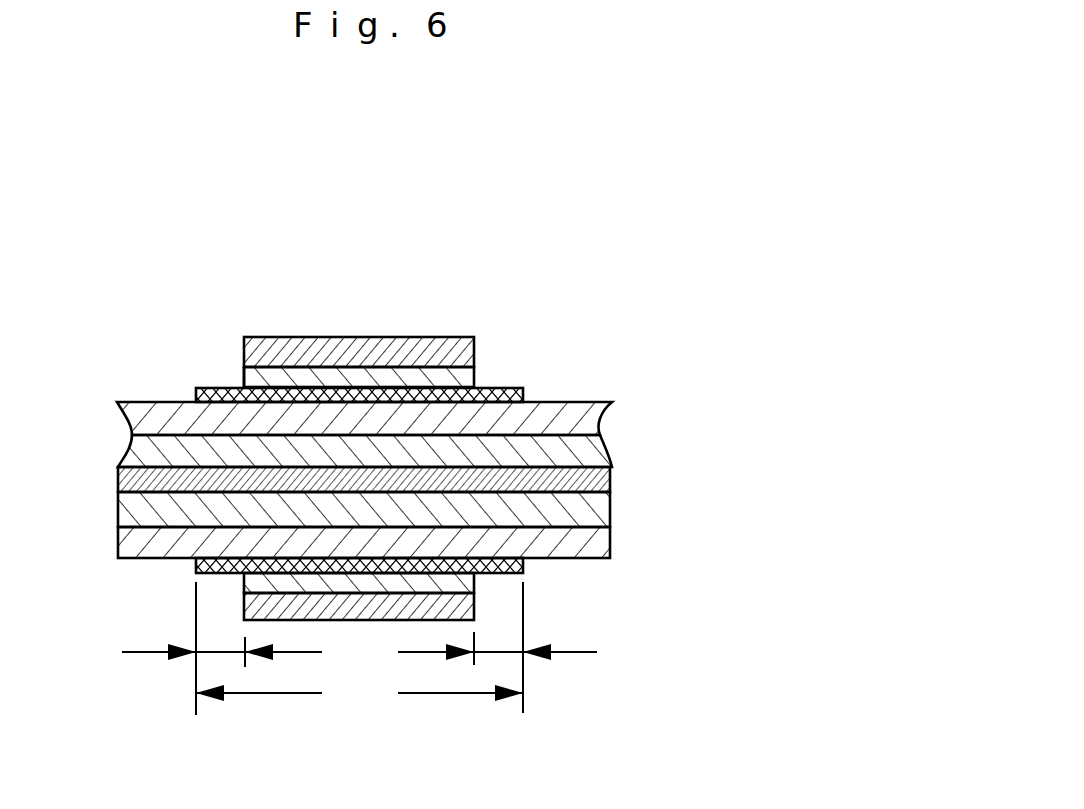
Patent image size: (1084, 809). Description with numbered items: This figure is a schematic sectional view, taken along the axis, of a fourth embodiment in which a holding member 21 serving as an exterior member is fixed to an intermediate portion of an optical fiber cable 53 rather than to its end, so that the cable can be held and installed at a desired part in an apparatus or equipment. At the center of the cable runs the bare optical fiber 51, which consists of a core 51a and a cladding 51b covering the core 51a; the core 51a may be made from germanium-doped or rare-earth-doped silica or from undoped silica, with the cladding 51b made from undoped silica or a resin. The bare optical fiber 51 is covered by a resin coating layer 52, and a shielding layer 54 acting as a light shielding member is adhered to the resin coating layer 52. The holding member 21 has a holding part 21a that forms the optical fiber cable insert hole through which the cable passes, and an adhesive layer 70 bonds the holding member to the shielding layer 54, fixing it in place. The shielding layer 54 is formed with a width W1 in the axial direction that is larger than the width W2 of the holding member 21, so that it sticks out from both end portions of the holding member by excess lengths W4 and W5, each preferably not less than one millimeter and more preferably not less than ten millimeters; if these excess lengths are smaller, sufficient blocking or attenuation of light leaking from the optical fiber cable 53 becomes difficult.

The holding member 21 is at (445, 310).
The holding part 21a is at (452, 368).
The adhesive layer 70 is at (243, 383).
The shielding layer 54 is at (523, 389).
The resin coating layer 52 is at (594, 413).
The bare optical fiber 51 is at (529, 526).
The cladding 51b is at (606, 457).
The core 51a is at (606, 490).
The optical fiber cable 53 is at (548, 559).
The width of the shielding layer W1 is at (359, 693).
The width of the exterior member W2 is at (359, 650).
The excess length of the shielding layer W4 is at (220, 652).
The excess length of the shielding layer W5 is at (497, 652).